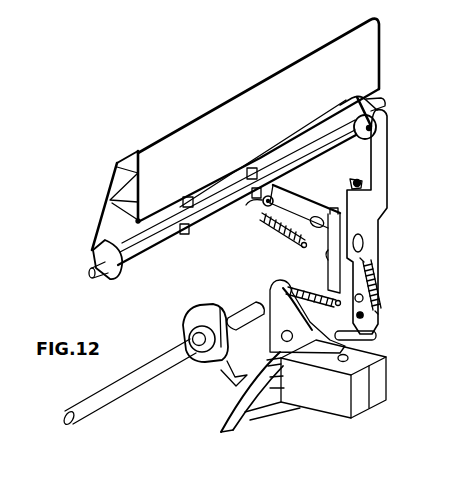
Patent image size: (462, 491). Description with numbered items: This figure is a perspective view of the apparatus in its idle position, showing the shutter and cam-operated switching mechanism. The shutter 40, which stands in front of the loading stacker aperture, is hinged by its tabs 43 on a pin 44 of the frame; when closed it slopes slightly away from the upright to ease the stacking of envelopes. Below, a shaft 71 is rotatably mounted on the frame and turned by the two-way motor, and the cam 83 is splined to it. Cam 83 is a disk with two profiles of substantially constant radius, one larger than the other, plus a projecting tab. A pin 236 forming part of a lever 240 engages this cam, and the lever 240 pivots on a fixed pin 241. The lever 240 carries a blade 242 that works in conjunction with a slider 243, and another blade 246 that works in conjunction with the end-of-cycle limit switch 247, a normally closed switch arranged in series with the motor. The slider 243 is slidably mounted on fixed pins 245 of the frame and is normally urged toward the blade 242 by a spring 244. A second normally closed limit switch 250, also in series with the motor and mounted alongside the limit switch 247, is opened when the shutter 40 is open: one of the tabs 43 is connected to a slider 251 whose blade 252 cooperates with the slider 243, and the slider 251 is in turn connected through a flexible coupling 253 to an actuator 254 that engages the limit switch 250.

The shutter 40 is at (372, 61).
The tabs 43 is at (380, 107).
The pin 44 is at (139, 249).
The shaft 71 is at (138, 380).
The cam 83 is at (211, 357).
The pin 236 is at (232, 385).
The lever 240 is at (224, 315).
The fixed pin 241 is at (266, 322).
The blade 242 is at (327, 267).
The slider 243 is at (318, 203).
The spring 244 is at (276, 237).
The fixed pins 245 is at (257, 207).
The blade 246 is at (377, 337).
The end-of-cycle limit switch 247 is at (304, 394).
The limit switch 250 is at (388, 364).
The slider 251 is at (380, 152).
The blade 252 is at (356, 180).
The flexible coupling 253 is at (378, 288).
The actuator 254 is at (364, 315).